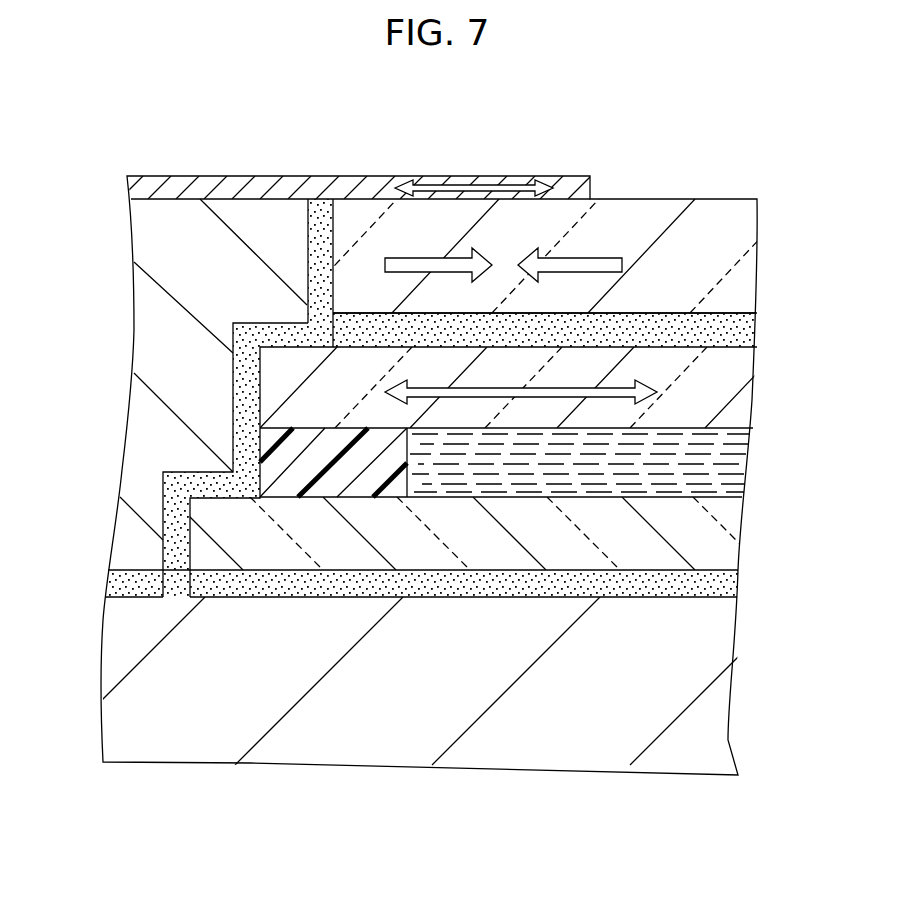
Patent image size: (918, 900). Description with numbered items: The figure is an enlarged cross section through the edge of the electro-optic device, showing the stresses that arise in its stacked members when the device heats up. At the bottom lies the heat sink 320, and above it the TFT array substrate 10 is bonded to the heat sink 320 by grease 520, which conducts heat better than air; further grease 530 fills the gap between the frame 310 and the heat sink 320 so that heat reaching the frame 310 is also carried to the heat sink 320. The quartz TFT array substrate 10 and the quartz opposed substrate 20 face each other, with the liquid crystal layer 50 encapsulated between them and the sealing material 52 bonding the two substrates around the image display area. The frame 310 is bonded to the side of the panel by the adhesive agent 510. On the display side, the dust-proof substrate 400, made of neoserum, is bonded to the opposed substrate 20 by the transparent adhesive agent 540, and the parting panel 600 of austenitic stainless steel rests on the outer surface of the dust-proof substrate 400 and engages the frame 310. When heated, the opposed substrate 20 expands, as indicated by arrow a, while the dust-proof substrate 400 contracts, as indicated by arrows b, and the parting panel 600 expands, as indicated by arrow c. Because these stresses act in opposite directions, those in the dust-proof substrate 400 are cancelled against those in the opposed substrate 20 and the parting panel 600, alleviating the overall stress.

The parting panel 600 is at (355, 150).
The dust-proof substrate 400 is at (543, 215).
The adhesive agent 510 is at (318, 295).
The transparent adhesive agent 540 is at (745, 331).
The opposed substrate 20 is at (418, 359).
The sealing material 52 is at (270, 455).
The liquid crystal layer 50 is at (737, 458).
The frame 310 is at (122, 525).
The TFT array substrate 10 is at (710, 545).
The grease 530 is at (120, 586).
The grease 520 is at (715, 587).
The heat sink 320 is at (216, 745).
The arrow a is at (560, 391).
The arrows b is at (413, 266).
The arrow c is at (475, 187).